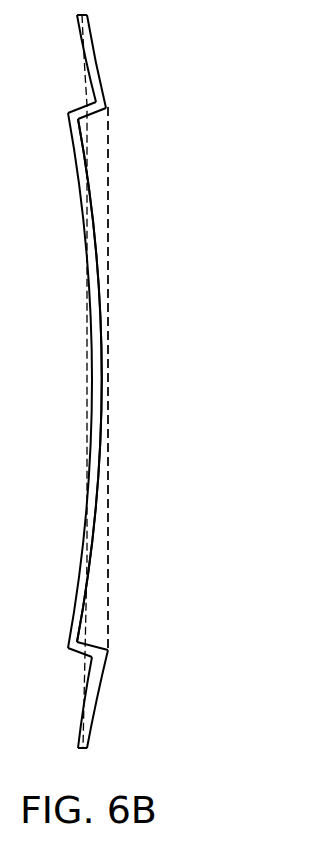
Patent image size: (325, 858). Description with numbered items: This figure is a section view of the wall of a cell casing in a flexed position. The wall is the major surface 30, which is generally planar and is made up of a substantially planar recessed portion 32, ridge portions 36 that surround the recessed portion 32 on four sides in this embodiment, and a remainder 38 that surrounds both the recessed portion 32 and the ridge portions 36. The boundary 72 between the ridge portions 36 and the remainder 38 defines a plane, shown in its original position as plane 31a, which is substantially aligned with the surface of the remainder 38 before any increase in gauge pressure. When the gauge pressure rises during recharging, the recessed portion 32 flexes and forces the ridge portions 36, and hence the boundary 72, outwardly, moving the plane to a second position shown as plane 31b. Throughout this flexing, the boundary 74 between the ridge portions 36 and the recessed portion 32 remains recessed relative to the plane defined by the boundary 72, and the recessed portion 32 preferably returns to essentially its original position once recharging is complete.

The major surface 30 is at (97, 519).
The plane 31a is at (88, 336).
The plane 31b is at (108, 198).
The recessed portion 32 is at (103, 380).
The ridge portions 36 is at (99, 138).
The remainder 38 is at (89, 37).
The boundary 72 is at (107, 109).
The boundary 74 is at (70, 116).